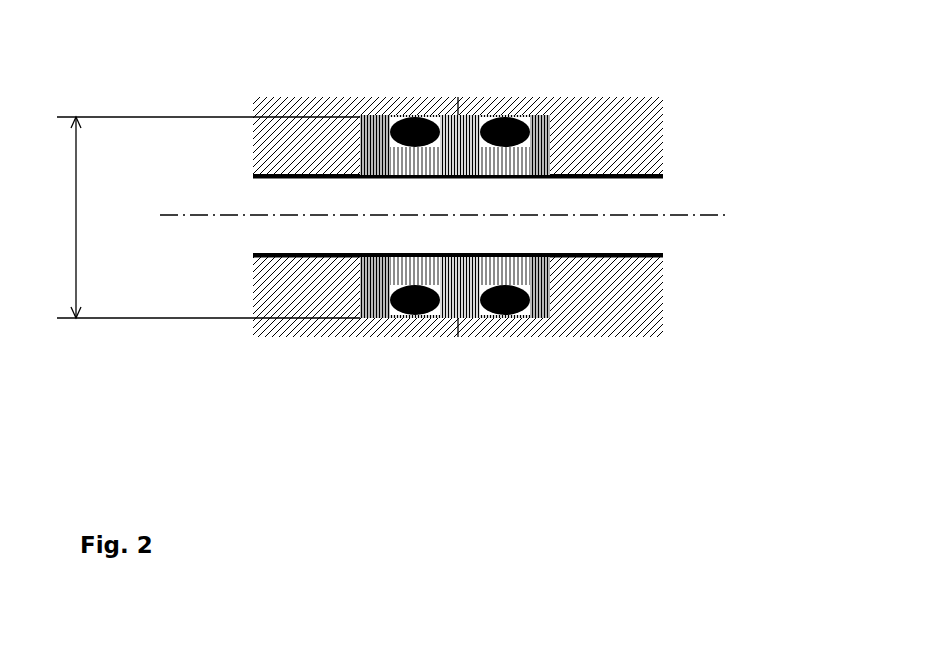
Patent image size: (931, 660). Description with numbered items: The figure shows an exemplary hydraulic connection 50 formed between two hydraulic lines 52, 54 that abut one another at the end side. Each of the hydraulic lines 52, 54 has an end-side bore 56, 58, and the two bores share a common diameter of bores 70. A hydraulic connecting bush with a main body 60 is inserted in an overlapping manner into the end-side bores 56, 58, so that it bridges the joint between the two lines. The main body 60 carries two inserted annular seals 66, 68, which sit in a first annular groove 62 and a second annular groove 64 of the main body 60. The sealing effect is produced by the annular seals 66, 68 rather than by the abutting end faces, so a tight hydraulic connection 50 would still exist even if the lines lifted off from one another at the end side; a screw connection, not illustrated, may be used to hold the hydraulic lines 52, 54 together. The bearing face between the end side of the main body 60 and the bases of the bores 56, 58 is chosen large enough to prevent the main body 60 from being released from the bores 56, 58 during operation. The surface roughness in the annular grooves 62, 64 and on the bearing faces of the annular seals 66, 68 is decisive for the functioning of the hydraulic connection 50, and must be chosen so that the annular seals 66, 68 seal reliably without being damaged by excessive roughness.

The hydraulic connection 50 is at (360, 368).
The first hydraulic line 52 is at (290, 145).
The second hydraulic line 54 is at (643, 150).
The first end-side bore 56 is at (360, 128).
The second end-side bore 58 is at (548, 133).
The main body 60 is at (405, 165).
The first annular groove 62 is at (422, 285).
The second annular groove 64 is at (500, 282).
The first annular seal 66 is at (418, 125).
The second annular seal 68 is at (512, 125).
The diameter of bores 70 is at (195, 217).